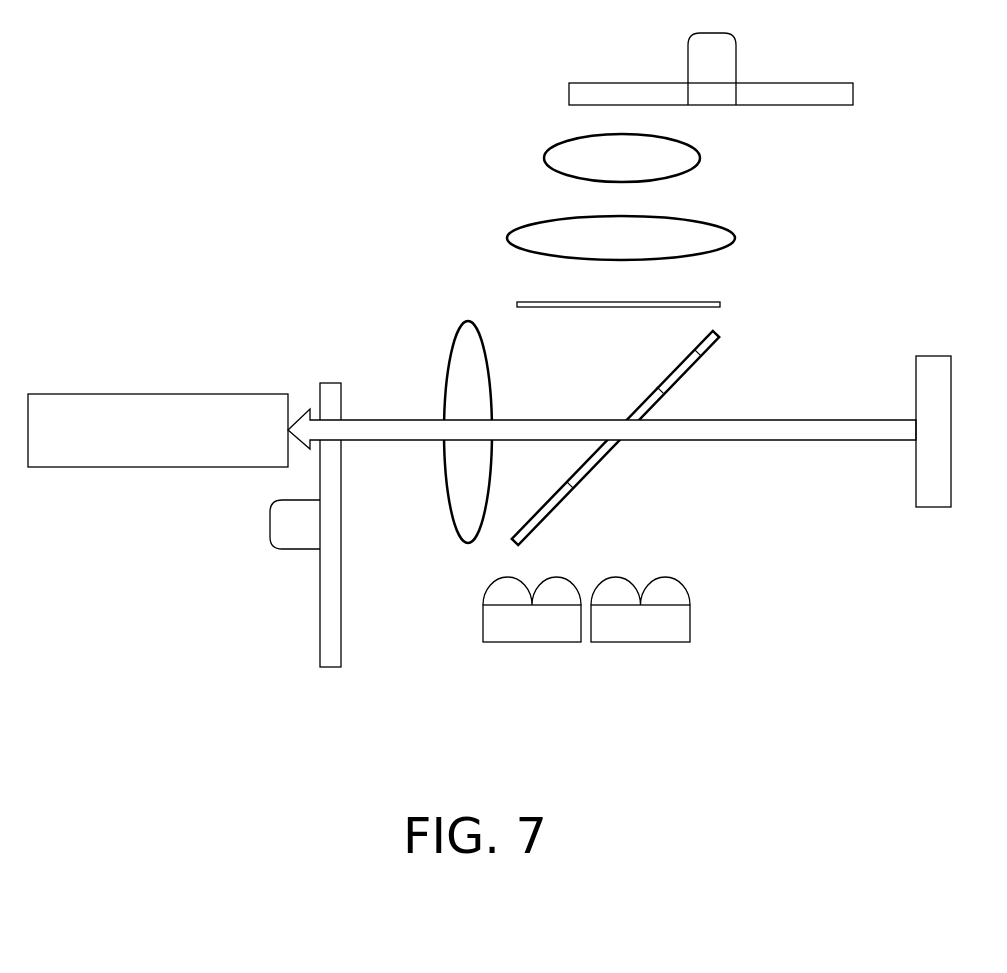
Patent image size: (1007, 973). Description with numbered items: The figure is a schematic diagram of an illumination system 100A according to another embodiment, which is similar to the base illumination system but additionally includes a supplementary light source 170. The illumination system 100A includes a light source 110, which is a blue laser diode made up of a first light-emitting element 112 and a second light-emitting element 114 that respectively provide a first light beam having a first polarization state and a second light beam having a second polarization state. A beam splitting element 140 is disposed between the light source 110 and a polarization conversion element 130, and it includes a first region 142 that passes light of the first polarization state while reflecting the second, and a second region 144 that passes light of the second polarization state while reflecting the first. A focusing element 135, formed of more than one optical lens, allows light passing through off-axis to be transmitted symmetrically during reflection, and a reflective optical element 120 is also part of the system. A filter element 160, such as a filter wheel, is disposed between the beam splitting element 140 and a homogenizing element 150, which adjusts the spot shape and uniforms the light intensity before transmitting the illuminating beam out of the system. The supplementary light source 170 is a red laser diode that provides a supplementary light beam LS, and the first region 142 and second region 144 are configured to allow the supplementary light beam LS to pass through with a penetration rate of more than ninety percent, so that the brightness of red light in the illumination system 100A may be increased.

The illumination system 100A is at (880, 757).
The light source 110 is at (586, 664).
The first light-emitting element 112 is at (640, 640).
The second light-emitting element 114 is at (553, 630).
The reflective optical element 120 is at (785, 82).
The polarization conversion element 130 is at (720, 302).
The focusing element 135 is at (545, 158).
The beam splitting element 140 is at (681, 431).
The first region 142 is at (652, 398).
The second region 144 is at (702, 353).
The homogenizing element 150 is at (153, 394).
The filter element 160 is at (332, 383).
The supplementary light source 170 is at (935, 356).
The supplementary light beam LS is at (772, 441).